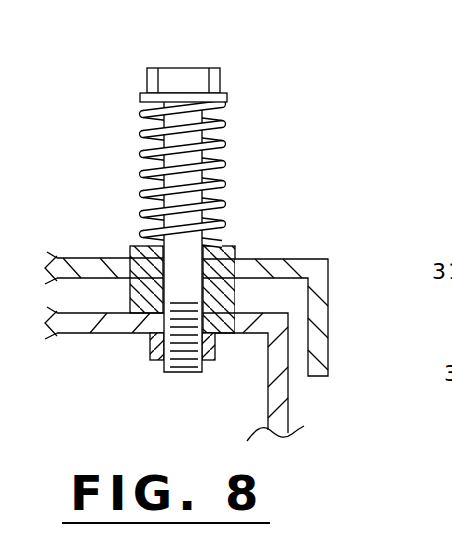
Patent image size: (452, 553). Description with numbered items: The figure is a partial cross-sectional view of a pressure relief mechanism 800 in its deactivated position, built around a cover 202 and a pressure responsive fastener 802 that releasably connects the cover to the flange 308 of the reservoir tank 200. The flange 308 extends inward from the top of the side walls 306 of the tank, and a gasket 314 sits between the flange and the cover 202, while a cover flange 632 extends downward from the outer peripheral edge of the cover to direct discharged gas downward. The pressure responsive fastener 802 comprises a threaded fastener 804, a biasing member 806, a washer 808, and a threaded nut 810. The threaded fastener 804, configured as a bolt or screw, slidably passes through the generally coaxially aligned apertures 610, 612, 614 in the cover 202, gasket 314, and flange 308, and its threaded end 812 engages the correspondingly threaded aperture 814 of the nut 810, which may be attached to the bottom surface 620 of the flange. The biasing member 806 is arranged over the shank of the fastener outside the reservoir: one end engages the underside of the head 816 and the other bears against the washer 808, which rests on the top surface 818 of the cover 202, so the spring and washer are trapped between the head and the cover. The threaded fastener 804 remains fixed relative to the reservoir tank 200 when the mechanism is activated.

The pressure relief mechanism 800 is at (328, 200).
The pressure responsive fastener 802 is at (183, 66).
The threaded fastener 804 is at (222, 79).
The biasing member 806 is at (143, 140).
The washer 808 is at (205, 241).
The threaded nut 810 is at (215, 345).
The threaded end 812 is at (180, 373).
The threaded aperture 814 is at (195, 355).
The head 816 is at (147, 78).
The top surface 818 is at (108, 258).
The gasket 314 is at (131, 300).
The flange 308 is at (102, 335).
The aperture 610 is at (202, 266).
The aperture 612 is at (201, 286).
The aperture 614 is at (151, 334).
The bottom surface 620 is at (123, 331).
The cover 202 is at (330, 258).
The cover flange 632 is at (330, 306).
The reservoir tank 200 is at (290, 393).
The side walls 306 is at (290, 419).